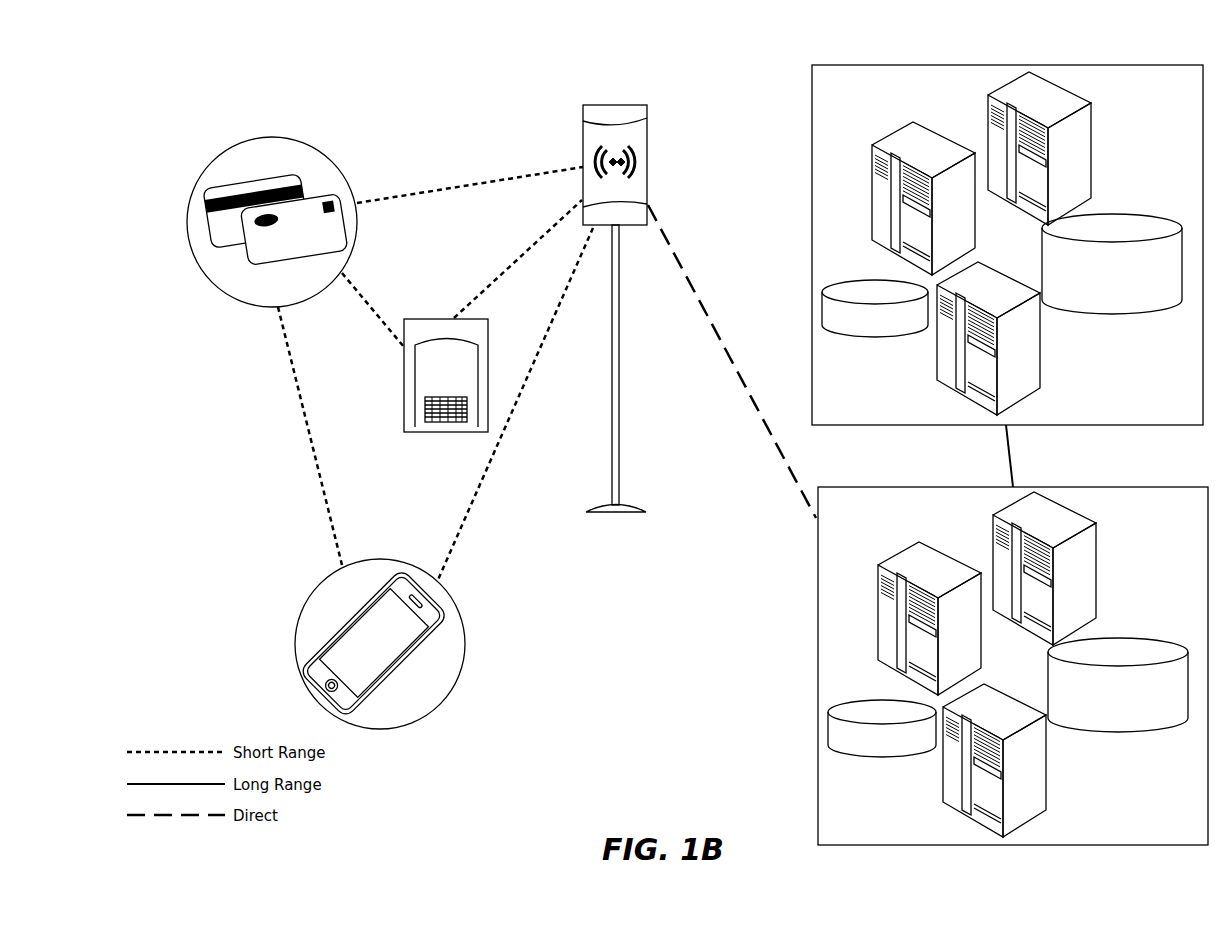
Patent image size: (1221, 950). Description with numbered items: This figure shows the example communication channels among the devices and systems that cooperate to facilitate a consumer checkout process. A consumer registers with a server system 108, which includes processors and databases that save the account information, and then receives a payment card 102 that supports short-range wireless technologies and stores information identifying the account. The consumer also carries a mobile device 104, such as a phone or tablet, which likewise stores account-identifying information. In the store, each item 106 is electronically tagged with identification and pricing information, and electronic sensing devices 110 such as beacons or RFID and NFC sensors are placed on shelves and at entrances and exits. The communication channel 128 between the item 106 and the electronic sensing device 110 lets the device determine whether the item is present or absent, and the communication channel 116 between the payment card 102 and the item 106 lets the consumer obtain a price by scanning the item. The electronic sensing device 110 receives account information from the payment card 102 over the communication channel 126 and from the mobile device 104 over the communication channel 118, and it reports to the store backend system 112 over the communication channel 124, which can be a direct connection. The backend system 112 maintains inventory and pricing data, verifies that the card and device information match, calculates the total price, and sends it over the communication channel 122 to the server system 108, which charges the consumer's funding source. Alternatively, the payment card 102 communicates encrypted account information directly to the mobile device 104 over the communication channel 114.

The payment card 102 is at (217, 182).
The mobile device 104 is at (428, 637).
The item 106 is at (440, 433).
The server system 108 is at (1145, 65).
The electronic sensing device 110 is at (615, 104).
The store backend system 112 is at (1150, 487).
The communication channel between the mobile device and the payment card 114 is at (308, 430).
The communication channel between the payment card and the item 116 is at (368, 300).
The communication channel between the mobile device and the electronic sensing devic 118 is at (500, 437).
The communication channel between the store backend system and the server system 122 is at (1002, 462).
The communication channel between the electronic sensing device and the backend syst 124 is at (699, 298).
The communication channel between the payment card and the electronic sensing device 126 is at (455, 187).
The communication channel between the item and the electronic sensing device 128 is at (532, 246).